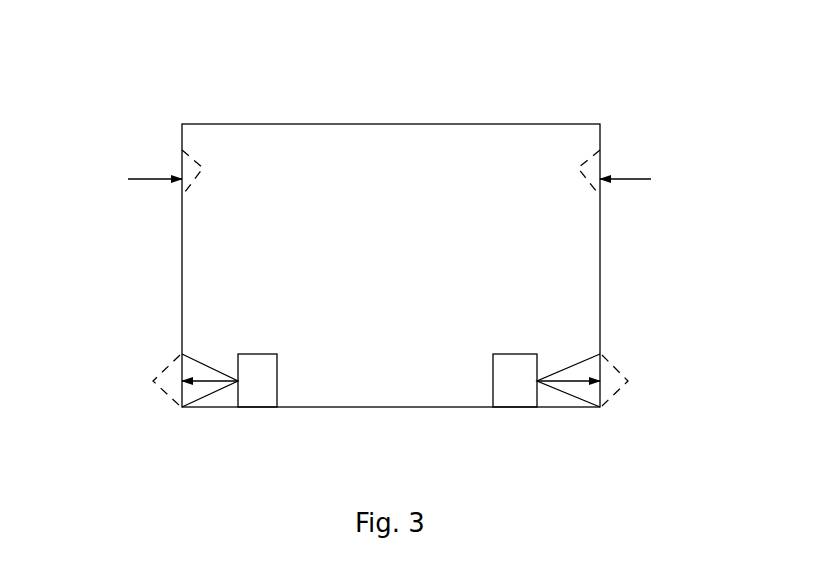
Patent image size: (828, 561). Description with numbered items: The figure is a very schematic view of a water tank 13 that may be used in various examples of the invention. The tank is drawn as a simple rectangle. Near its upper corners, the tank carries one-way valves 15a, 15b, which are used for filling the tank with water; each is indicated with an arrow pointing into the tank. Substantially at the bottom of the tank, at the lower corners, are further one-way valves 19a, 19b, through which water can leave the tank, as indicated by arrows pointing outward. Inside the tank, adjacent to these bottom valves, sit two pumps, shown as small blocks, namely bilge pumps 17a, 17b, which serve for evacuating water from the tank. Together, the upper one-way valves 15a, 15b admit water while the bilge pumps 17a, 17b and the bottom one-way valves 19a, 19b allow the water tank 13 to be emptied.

The water tank 13 is at (385, 152).
The one-way valve 15a is at (203, 163).
The one-way valve 15b is at (590, 157).
The bilge pump 17a is at (263, 393).
The bilge pump 17b is at (518, 380).
The one-way valve 19a is at (158, 372).
The one-way valve 19b is at (622, 375).